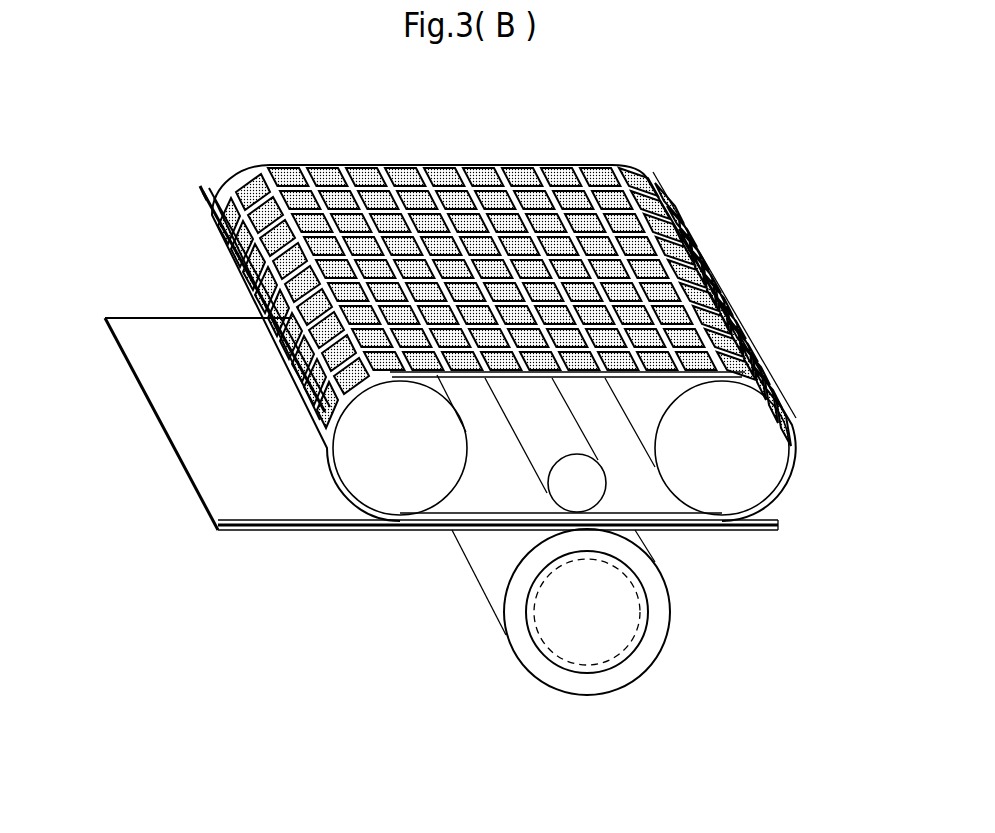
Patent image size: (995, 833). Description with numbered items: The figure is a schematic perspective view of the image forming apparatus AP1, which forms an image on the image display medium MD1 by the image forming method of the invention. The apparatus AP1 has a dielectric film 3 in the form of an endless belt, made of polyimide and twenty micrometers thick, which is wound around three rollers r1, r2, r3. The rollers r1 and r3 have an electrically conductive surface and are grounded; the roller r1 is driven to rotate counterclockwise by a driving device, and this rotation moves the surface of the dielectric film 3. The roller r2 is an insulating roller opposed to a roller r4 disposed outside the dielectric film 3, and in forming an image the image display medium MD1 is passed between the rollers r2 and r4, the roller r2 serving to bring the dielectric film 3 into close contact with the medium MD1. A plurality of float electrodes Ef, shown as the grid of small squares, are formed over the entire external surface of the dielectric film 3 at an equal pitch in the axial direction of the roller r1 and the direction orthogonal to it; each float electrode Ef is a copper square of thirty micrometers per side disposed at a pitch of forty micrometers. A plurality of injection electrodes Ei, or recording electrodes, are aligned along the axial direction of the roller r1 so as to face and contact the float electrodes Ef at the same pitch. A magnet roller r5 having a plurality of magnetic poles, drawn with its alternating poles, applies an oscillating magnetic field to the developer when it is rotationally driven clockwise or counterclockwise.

The image forming apparatus AP1 is at (730, 142).
The image display medium MD1 is at (150, 333).
The dielectric film 3 is at (611, 162).
The float electrodes Ef is at (490, 200).
The injection electrodes Ei is at (240, 215).
The roller r1 is at (388, 480).
The roller r2 is at (745, 475).
The roller r3 is at (593, 485).
The roller r4 is at (530, 643).
The magnet roller r5 is at (638, 618).